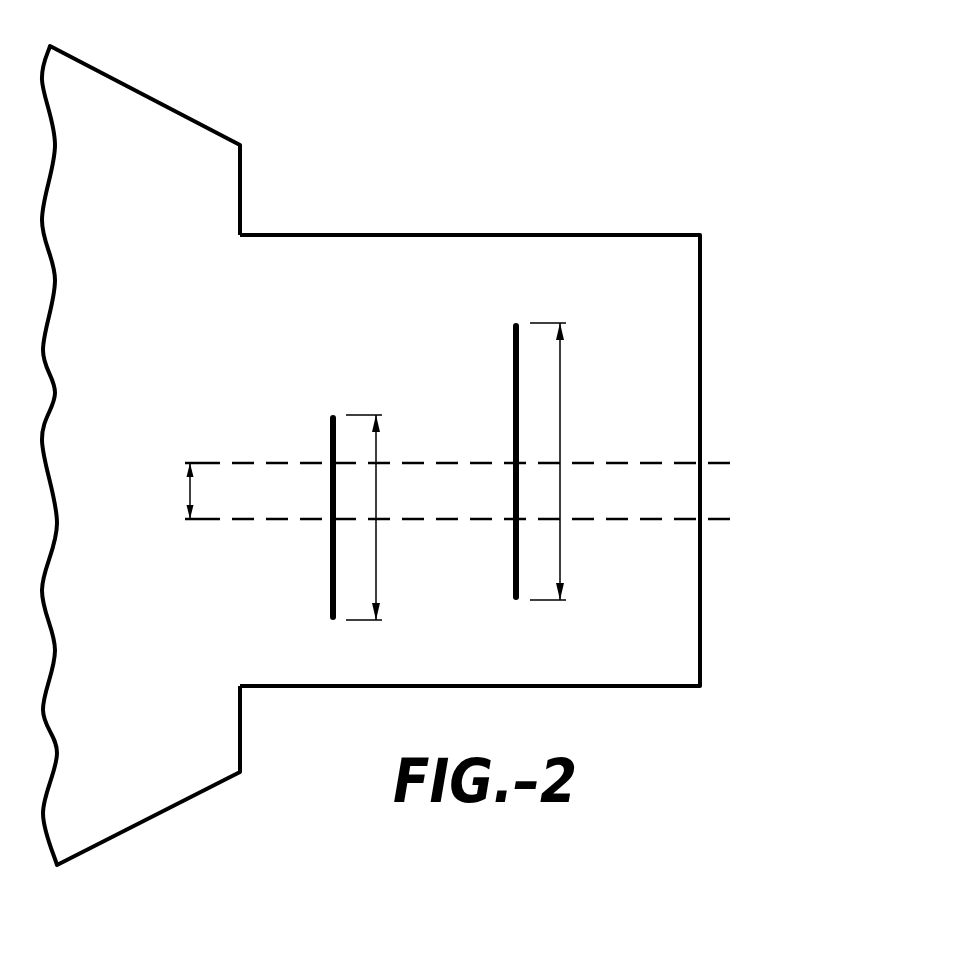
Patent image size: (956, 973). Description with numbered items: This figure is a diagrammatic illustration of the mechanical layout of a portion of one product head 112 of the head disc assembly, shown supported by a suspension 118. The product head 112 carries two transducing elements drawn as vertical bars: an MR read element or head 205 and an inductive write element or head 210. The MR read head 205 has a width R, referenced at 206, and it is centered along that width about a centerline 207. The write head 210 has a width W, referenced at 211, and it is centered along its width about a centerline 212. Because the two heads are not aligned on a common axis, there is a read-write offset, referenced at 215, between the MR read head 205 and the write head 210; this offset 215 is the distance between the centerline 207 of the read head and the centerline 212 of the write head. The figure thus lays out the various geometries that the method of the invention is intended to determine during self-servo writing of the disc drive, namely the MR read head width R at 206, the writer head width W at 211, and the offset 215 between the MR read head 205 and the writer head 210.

The suspension 118 is at (77, 85).
The product head 112 is at (630, 188).
The MR read element or head 205 is at (330, 573).
The read head width R 206 is at (376, 557).
The centerline of the MR read head 207 is at (768, 520).
The inductive write element or head 210 is at (513, 378).
The write head width W 211 is at (563, 402).
The centerline of the write head 212 is at (768, 463).
The read-write offset 215 is at (188, 492).